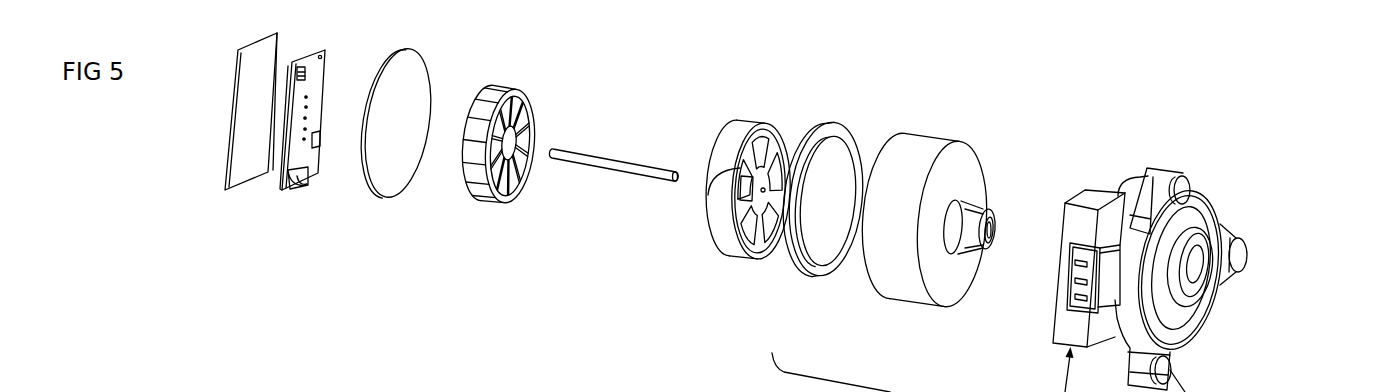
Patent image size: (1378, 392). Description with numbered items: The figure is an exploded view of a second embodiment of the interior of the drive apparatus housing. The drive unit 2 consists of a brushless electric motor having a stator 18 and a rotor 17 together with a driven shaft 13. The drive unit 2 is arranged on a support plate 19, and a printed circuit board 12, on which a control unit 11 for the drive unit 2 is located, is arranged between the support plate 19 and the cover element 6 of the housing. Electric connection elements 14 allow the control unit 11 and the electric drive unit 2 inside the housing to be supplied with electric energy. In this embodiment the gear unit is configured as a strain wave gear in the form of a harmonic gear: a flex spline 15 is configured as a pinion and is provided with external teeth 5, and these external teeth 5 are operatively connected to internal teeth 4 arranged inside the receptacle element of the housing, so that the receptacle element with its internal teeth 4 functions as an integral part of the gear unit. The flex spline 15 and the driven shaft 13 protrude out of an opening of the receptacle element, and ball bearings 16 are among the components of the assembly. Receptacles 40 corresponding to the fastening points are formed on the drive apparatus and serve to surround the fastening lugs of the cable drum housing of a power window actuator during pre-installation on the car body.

The drive unit 2 is at (592, 232).
The internal teeth 4 is at (1143, 250).
The external teeth 5 is at (913, 150).
The cover element 6 is at (238, 206).
The control unit 11 is at (296, 166).
The printed circuit board 12 is at (303, 208).
The driven shaft 13 is at (613, 230).
The electric connection elements 14 is at (1080, 240).
The flex spline 15 is at (929, 224).
The ball bearings 16 is at (807, 295).
The rotor 17 is at (718, 268).
The stator 18 is at (478, 220).
The support plate 19 is at (375, 212).
The receptacles 40 is at (1186, 182).